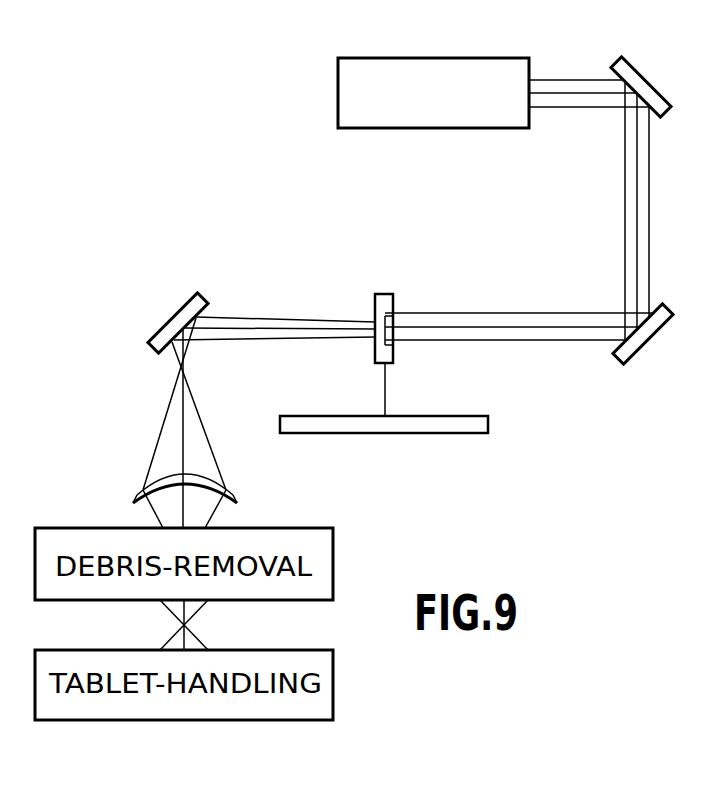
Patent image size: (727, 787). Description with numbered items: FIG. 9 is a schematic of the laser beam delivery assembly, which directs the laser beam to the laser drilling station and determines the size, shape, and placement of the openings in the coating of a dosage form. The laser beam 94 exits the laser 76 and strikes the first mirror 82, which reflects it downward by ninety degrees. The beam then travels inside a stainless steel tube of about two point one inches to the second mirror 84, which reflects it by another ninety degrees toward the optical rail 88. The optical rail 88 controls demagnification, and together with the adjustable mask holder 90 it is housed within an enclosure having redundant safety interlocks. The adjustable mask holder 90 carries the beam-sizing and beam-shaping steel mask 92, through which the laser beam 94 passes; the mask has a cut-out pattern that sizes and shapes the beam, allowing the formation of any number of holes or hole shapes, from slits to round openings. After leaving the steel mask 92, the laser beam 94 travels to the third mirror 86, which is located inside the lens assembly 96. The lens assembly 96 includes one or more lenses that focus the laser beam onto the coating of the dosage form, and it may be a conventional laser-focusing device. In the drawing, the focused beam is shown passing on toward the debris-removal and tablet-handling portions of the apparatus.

The laser 76 is at (413, 101).
The first mirror 82 is at (655, 70).
The second mirror 84 is at (650, 343).
The third mirror 86 is at (172, 306).
The optical rail 88 is at (489, 424).
The adjustable mask holder 90 is at (386, 387).
The steel mask 92 is at (385, 293).
The laser beam 94 is at (581, 96).
The lens assembly 96 is at (247, 490).